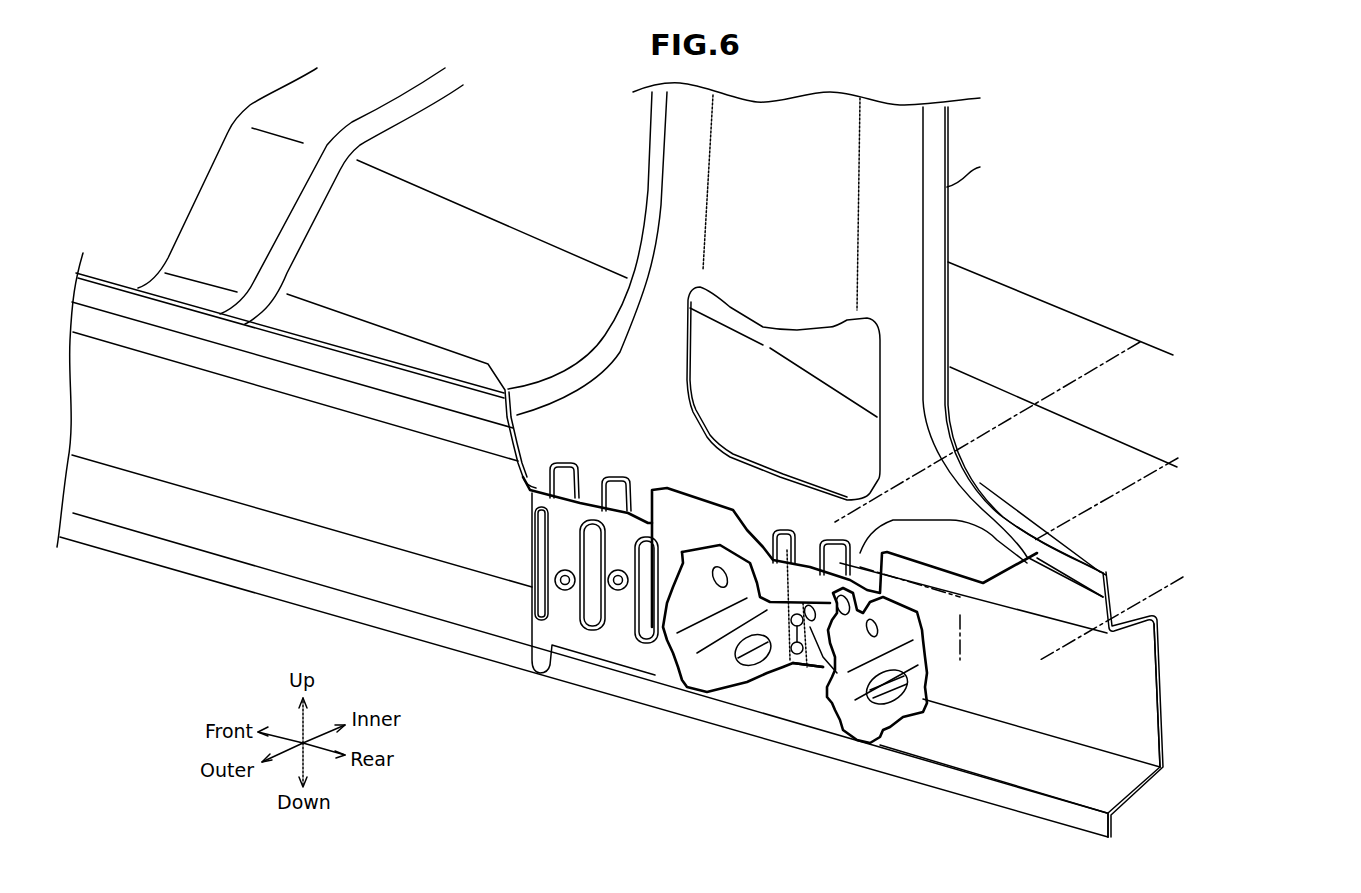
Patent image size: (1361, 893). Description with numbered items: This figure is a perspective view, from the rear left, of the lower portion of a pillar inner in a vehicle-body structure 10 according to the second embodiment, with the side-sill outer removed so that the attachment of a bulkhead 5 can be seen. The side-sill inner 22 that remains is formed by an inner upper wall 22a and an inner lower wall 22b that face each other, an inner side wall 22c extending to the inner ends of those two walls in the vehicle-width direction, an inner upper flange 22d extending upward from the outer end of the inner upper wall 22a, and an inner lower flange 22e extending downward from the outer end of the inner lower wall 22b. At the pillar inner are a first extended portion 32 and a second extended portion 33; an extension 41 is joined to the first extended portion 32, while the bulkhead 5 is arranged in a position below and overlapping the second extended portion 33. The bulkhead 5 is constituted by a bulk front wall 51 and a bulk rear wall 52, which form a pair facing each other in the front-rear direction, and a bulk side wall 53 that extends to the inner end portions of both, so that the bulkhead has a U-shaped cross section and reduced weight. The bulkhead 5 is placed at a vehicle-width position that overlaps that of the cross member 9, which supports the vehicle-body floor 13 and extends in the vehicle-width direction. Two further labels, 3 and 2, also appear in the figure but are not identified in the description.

The vehicle-body structure 10 is at (1117, 167).
The center pillar 3 is at (950, 187).
The vehicle-body floor 13 is at (1023, 320).
The first extended portion 32 is at (507, 447).
The second extended portion 33 is at (975, 521).
The extension 41 is at (535, 547).
The bulkhead 5 is at (865, 817).
The bulk front wall 51 is at (723, 663).
The bulk rear wall 52 is at (857, 713).
The bulk side wall 53 is at (800, 657).
The cross member 9 is at (995, 668).
The side sill 2 is at (584, 687).
The side-sill inner 22 is at (1253, 507).
The inner upper wall 22a is at (1113, 627).
The inner lower wall 22b is at (1143, 792).
The inner side wall 22c is at (1160, 707).
The inner upper flange 22d is at (1117, 610).
The inner lower flange 22e is at (1113, 818).